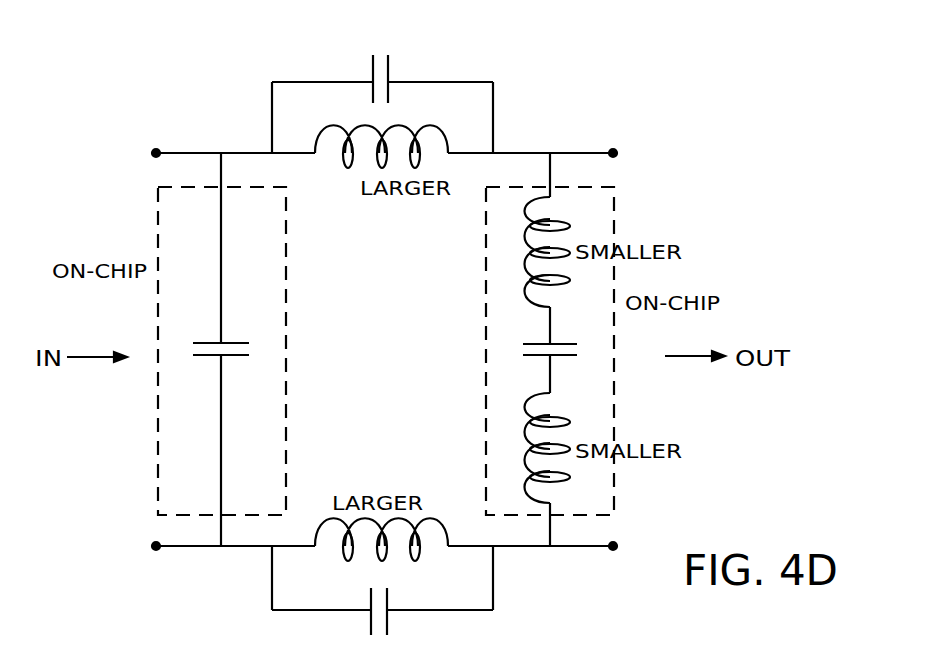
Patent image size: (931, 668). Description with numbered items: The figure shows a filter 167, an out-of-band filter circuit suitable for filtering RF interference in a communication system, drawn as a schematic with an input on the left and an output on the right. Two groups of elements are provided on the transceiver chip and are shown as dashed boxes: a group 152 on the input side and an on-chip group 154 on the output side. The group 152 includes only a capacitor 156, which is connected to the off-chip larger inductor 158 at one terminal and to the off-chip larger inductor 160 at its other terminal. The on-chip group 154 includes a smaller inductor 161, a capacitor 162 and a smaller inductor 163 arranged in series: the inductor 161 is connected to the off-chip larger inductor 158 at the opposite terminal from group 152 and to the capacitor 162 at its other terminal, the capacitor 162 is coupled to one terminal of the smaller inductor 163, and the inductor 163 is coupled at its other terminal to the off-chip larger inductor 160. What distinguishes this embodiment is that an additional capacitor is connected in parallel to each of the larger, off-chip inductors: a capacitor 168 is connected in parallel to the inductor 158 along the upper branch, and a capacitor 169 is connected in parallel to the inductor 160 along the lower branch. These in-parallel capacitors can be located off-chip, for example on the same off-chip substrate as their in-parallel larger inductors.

The group 152 is at (148, 206).
The on-chip group 154 is at (625, 201).
The capacitor 156 is at (230, 357).
The off-chip larger inductor 158 is at (348, 168).
The off-chip larger inductor 160 is at (384, 562).
The smaller inductor 161 is at (525, 261).
The capacitor 162 is at (535, 357).
The smaller inductor 163 is at (522, 458).
The filter 167 is at (619, 109).
The capacitor 168 is at (371, 73).
The capacitor 169 is at (389, 622).